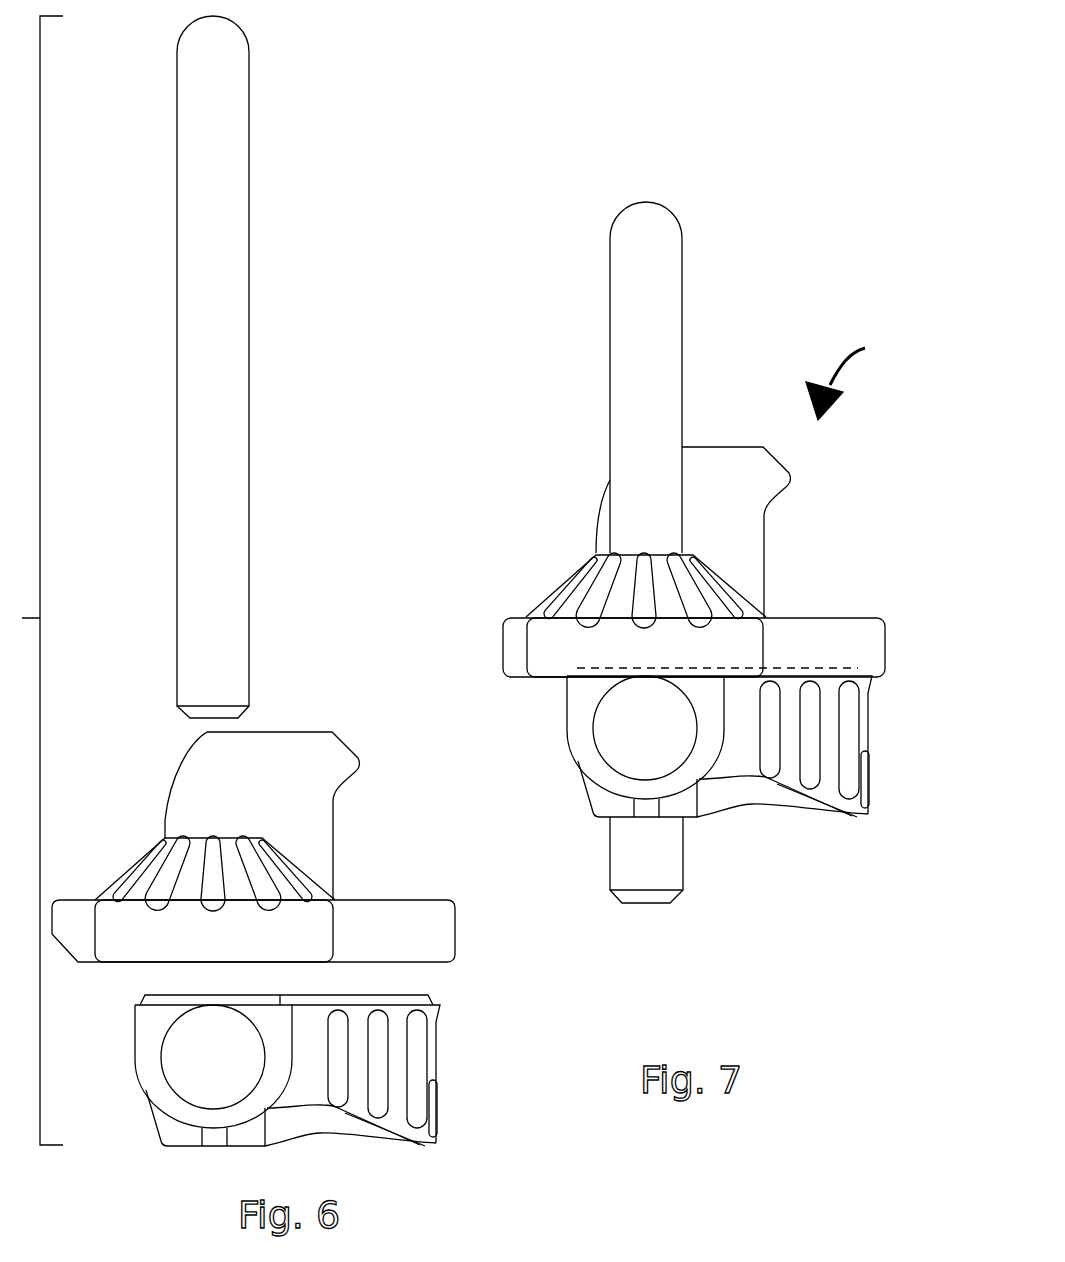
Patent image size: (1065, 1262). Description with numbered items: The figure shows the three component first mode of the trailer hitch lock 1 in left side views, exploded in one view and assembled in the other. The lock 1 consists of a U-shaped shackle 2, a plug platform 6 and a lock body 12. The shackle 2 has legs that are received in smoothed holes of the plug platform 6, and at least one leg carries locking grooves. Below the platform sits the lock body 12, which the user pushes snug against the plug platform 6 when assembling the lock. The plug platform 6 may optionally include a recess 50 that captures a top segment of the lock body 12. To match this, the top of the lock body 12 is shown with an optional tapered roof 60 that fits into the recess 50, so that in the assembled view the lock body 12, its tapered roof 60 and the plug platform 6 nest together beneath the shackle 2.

In FIG. 6, the three component trailer hitch lock 1 is at (35, 580).
In FIG. 7, the three component trailer hitch lock 1 is at (849, 376).
In FIG. 6, the U-shaped shackle 2 is at (237, 383).
In FIG. 7, the U-shaped shackle 2 is at (668, 352).
In FIG. 6, the plug platform 6 is at (422, 913).
In FIG. 7, the plug platform 6 is at (838, 628).
In FIG. 6, the lock body 12 is at (420, 1138).
In FIG. 7, the lock body 12 is at (855, 810).
In FIG. 7, the recess 50 is at (858, 668).
In FIG. 6, the tapered roof 60 is at (420, 995).